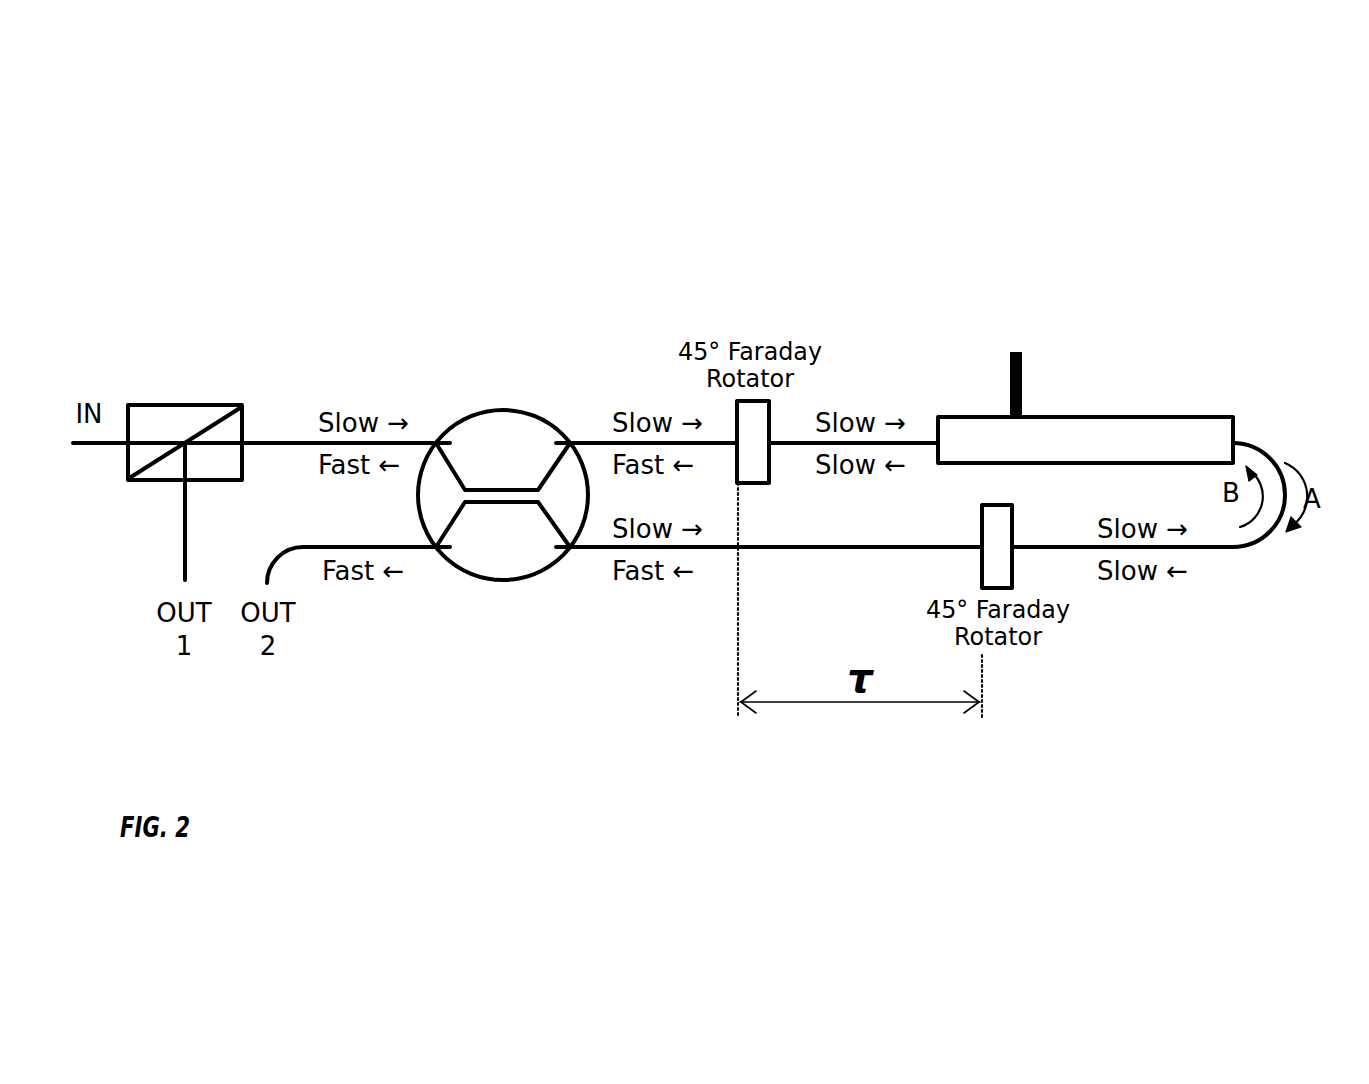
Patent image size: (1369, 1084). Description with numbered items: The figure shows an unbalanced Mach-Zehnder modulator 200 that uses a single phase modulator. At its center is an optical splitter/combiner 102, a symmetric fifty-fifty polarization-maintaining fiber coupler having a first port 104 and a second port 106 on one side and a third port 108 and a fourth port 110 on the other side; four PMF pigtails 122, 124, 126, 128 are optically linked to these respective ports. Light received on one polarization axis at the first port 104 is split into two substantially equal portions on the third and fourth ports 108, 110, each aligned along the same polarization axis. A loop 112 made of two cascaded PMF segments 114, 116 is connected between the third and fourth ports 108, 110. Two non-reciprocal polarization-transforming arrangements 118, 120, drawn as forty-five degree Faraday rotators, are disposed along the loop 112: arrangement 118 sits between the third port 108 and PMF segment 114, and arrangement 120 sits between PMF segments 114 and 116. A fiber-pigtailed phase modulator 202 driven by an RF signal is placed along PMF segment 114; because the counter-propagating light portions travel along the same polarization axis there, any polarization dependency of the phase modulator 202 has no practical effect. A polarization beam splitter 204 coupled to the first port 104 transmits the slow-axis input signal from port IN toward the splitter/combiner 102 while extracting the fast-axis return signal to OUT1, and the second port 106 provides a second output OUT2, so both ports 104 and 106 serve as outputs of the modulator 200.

The unbalanced Mach-Zehnder modulator 200 is at (210, 240).
The polarization beam splitter 204 is at (172, 403).
The PMF pigtail 122 is at (293, 442).
The optical splitter/combiner 102 is at (503, 412).
The first port 104 is at (438, 442).
The third port 108 is at (570, 442).
The second port 106 is at (427, 547).
The fourth port 110 is at (572, 548).
The PMF pigtail 126 is at (602, 442).
The loop 112 is at (735, 291).
The non-reciprocal polarization-transforming arrangement 118 is at (772, 417).
The PMF segment 114 is at (923, 442).
The phase modulator 202 is at (1137, 415).
The PMF segment 116 is at (845, 548).
The PMF pigtail 128 is at (717, 548).
The non-reciprocal polarization-transforming arrangement 120 is at (1012, 562).
The PMF pigtail 124 is at (303, 548).